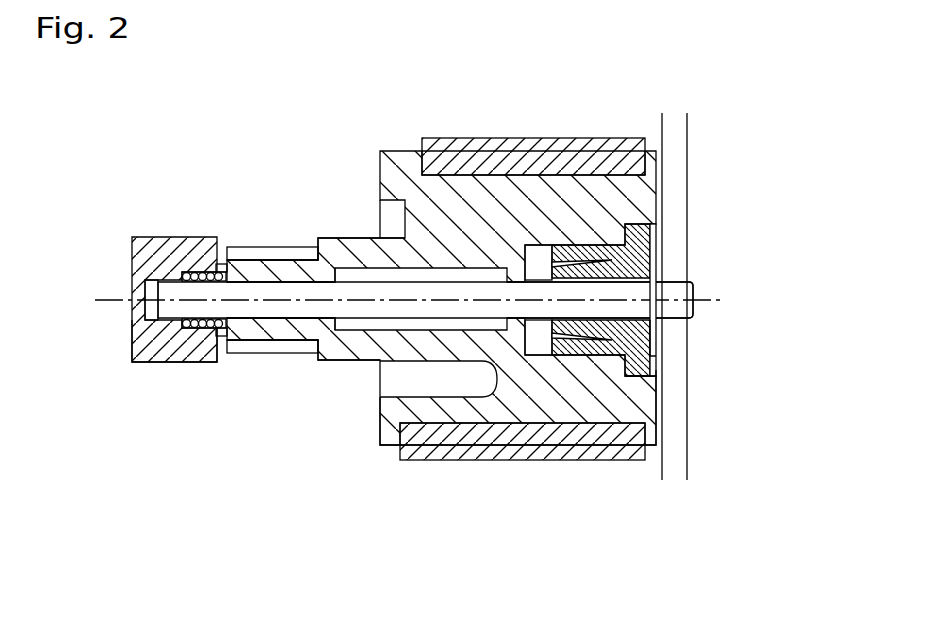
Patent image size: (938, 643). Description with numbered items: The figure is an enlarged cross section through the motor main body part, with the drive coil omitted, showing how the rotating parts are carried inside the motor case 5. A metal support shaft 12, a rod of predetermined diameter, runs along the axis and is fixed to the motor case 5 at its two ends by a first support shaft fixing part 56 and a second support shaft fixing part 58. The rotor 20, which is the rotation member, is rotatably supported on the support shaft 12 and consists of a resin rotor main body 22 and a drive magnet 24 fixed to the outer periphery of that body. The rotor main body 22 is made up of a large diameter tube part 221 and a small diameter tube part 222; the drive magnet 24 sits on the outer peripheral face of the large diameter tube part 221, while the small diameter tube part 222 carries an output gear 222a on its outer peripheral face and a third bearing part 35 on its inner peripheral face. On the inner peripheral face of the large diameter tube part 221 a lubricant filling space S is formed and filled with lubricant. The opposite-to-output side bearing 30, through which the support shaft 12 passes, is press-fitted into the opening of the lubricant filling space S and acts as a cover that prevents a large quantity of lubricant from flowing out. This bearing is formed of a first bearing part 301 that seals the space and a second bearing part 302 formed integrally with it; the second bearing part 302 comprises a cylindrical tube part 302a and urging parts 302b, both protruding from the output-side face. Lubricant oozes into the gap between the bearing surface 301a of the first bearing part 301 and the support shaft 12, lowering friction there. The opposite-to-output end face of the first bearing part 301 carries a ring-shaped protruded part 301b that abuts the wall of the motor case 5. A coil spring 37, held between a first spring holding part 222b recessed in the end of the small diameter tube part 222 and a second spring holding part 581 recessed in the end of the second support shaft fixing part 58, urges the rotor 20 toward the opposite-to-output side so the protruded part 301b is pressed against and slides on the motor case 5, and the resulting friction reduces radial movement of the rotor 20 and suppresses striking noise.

The motor case 5 is at (688, 432).
The support shaft 12 is at (378, 305).
The rotor 20 is at (422, 371).
The rotor main body 22 is at (537, 412).
The large diameter tube part 221 is at (465, 417).
The small diameter tube part 222 is at (272, 335).
The output gear 222a is at (277, 248).
The first spring holding part 222b is at (220, 264).
The drive magnet 24 is at (590, 448).
The opposite-to-output side bearing 30 is at (797, 90).
The first bearing part 301 is at (652, 224).
The bearing surface 301a is at (645, 338).
The protruded part 301b is at (655, 376).
The second bearing part 302 is at (588, 240).
The cylindrical tube part 302a is at (580, 247).
The urging parts 302b is at (558, 250).
The third bearing part 35 is at (212, 320).
The coil spring 37 is at (187, 274).
The first support shaft fixing part 56 is at (680, 297).
The second support shaft fixing part 58 is at (135, 298).
The second spring holding part 581 is at (163, 348).
The lubricant filling space S is at (515, 265).